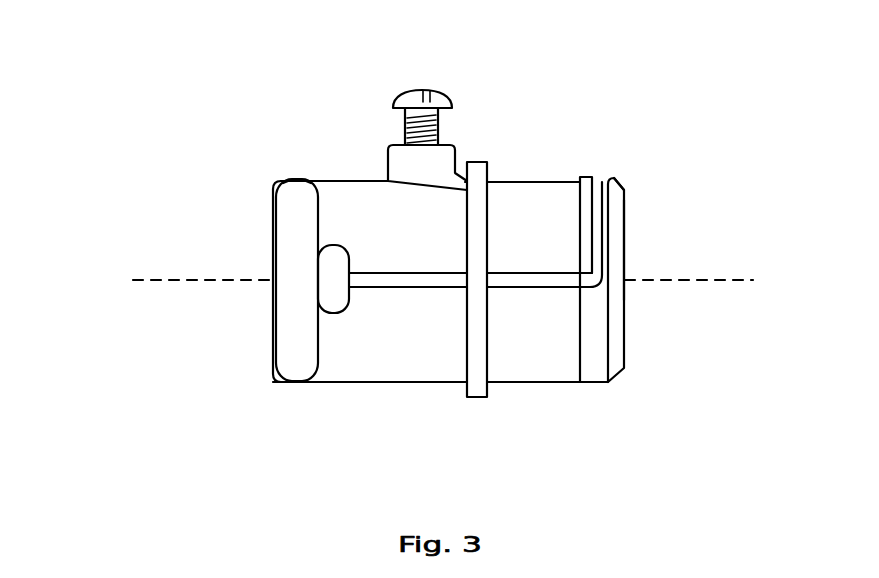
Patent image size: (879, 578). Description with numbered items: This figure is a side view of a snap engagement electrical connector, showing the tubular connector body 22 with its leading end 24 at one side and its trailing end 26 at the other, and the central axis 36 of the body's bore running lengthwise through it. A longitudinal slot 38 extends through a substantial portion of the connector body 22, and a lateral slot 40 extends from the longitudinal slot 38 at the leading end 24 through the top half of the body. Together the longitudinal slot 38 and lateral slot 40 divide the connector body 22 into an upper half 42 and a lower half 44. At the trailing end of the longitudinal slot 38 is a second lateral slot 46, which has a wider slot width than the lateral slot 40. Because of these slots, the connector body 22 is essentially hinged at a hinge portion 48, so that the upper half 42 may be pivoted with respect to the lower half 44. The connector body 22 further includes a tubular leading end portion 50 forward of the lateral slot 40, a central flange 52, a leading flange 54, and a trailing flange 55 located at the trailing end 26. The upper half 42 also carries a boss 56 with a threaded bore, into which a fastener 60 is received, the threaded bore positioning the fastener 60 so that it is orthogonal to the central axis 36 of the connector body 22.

The tubular connector body 22 is at (140, 118).
The leading end 24 is at (625, 250).
The trailing end 26 is at (300, 282).
The central axis 36 is at (710, 282).
The longitudinal slot 38 is at (408, 275).
The lateral slot 40 is at (602, 192).
The upper half 42 is at (549, 245).
The lower half 44 is at (549, 343).
The second lateral slot 46 is at (335, 258).
The hinge portion 48 is at (272, 293).
The tubular leading end portion 50 is at (619, 190).
The central flange 52 is at (480, 162).
The leading flange 54 is at (587, 176).
The trailing flange 55 is at (296, 181).
The boss 56 is at (388, 163).
The fastener 60 is at (429, 91).